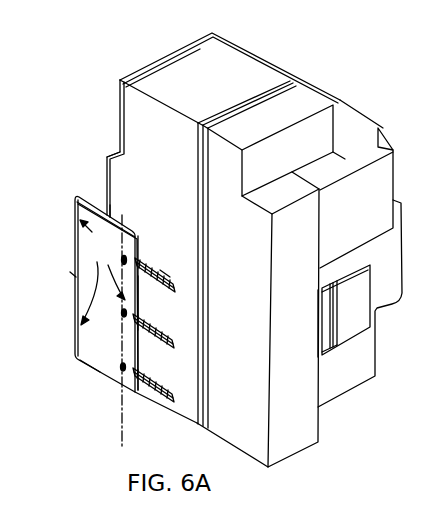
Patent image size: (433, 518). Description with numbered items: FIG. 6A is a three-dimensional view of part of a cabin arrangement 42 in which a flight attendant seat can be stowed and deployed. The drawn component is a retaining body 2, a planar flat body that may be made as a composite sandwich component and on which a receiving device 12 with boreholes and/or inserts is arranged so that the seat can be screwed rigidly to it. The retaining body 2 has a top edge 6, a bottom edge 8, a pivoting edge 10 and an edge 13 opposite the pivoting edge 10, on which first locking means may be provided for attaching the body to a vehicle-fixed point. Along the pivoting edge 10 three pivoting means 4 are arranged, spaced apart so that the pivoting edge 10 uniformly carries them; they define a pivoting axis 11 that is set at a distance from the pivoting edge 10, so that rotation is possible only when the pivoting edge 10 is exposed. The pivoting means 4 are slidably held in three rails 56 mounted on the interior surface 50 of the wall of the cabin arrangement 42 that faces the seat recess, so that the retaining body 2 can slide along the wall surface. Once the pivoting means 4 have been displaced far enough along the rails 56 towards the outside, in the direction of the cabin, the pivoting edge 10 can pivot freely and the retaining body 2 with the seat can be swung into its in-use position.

The cabin arrangement 42 is at (325, 50).
The retaining body 2 is at (86, 212).
The pivoting axis 11 is at (127, 160).
The top edge 6 is at (120, 215).
The edge opposite the pivoting edge 13 is at (66, 275).
The receiving device 12 is at (124, 244).
The pivoting means 4 is at (123, 313).
The rails 56 is at (152, 247).
The interior surface 50 is at (169, 269).
The pivoting edge 10 is at (138, 278).
The bottom edge 8 is at (93, 377).